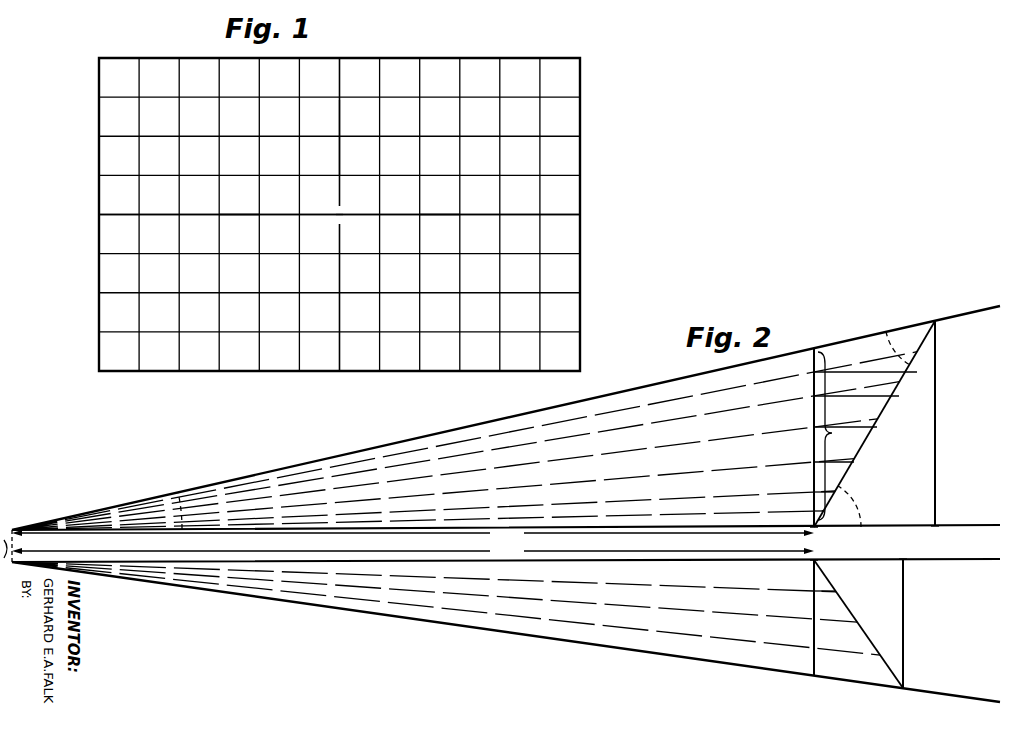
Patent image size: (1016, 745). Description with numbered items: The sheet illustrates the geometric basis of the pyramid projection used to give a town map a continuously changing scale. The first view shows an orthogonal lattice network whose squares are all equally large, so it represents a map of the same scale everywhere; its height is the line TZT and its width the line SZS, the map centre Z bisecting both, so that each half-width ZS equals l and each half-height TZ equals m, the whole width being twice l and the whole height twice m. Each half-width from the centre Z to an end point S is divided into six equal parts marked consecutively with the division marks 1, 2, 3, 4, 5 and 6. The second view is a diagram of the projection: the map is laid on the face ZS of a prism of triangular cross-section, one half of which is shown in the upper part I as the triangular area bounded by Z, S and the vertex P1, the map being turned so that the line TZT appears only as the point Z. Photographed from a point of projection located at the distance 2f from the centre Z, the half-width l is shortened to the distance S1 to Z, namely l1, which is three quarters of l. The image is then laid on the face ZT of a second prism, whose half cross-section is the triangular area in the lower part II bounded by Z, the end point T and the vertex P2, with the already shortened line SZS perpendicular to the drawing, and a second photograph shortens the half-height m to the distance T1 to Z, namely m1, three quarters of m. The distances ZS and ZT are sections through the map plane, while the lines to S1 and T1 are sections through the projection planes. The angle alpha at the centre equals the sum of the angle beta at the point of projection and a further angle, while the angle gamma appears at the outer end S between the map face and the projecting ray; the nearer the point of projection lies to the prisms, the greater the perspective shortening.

In FIG. 1, the end point of the map width S is at (339, 214).
In FIG. 2, the end point of the map width S is at (936, 414).
In FIG. 1, the end point of the map height T is at (342, 215).
In FIG. 2, the end point of the map height T is at (902, 634).
In FIG. 1, the half-height of the map m is at (338, 205).
In FIG. 2, the half-height of the map m is at (858, 624).
In FIG. 1, the map centre Z is at (335, 209).
In FIG. 2, the map centre Z is at (807, 544).
In FIG. 1, the half-width of the map l is at (339, 213).
In FIG. 2, the half-width of the map l is at (874, 424).
In FIG. 1, the first division mark 1 is at (339, 221).
In FIG. 2, the first division mark 1 is at (811, 504).
In FIG. 1, the second division mark 2 is at (339, 221).
In FIG. 2, the second division mark 2 is at (816, 485).
In FIG. 1, the third division mark 3 is at (339, 220).
In FIG. 2, the third division mark 3 is at (825, 454).
In FIG. 1, the fourth division mark 4 is at (339, 221).
In FIG. 2, the fourth division mark 4 is at (837, 422).
In FIG. 1, the fifth division mark 5 is at (339, 221).
In FIG. 2, the fifth division mark 5 is at (848, 392).
In FIG. 1, the sixth division mark 6 is at (339, 221).
In FIG. 2, the sixth division mark 6 is at (856, 367).
In FIG. 2, the end point of the projected half-width S1 is at (819, 428).
In FIG. 2, the shortened half-width l1 is at (831, 436).
In FIG. 2, the shortened half-height m1 is at (825, 608).
In FIG. 2, the end point of the projected half-height T1 is at (814, 630).
In FIG. 2, the vertex of the first prism section P1 is at (940, 536).
In FIG. 2, the vertex of the second prism section P2 is at (907, 552).
In FIG. 2, the upper part of the projection diagram I is at (952, 425).
In FIG. 2, the lower part of the projection diagram II is at (931, 625).
In FIG. 2, the projection distance 2f is at (413, 544).
In FIG. 2, the angle alpha is at (846, 506).
In FIG. 2, the angle beta is at (173, 510).
In FIG. 2, the angle gamma is at (899, 349).